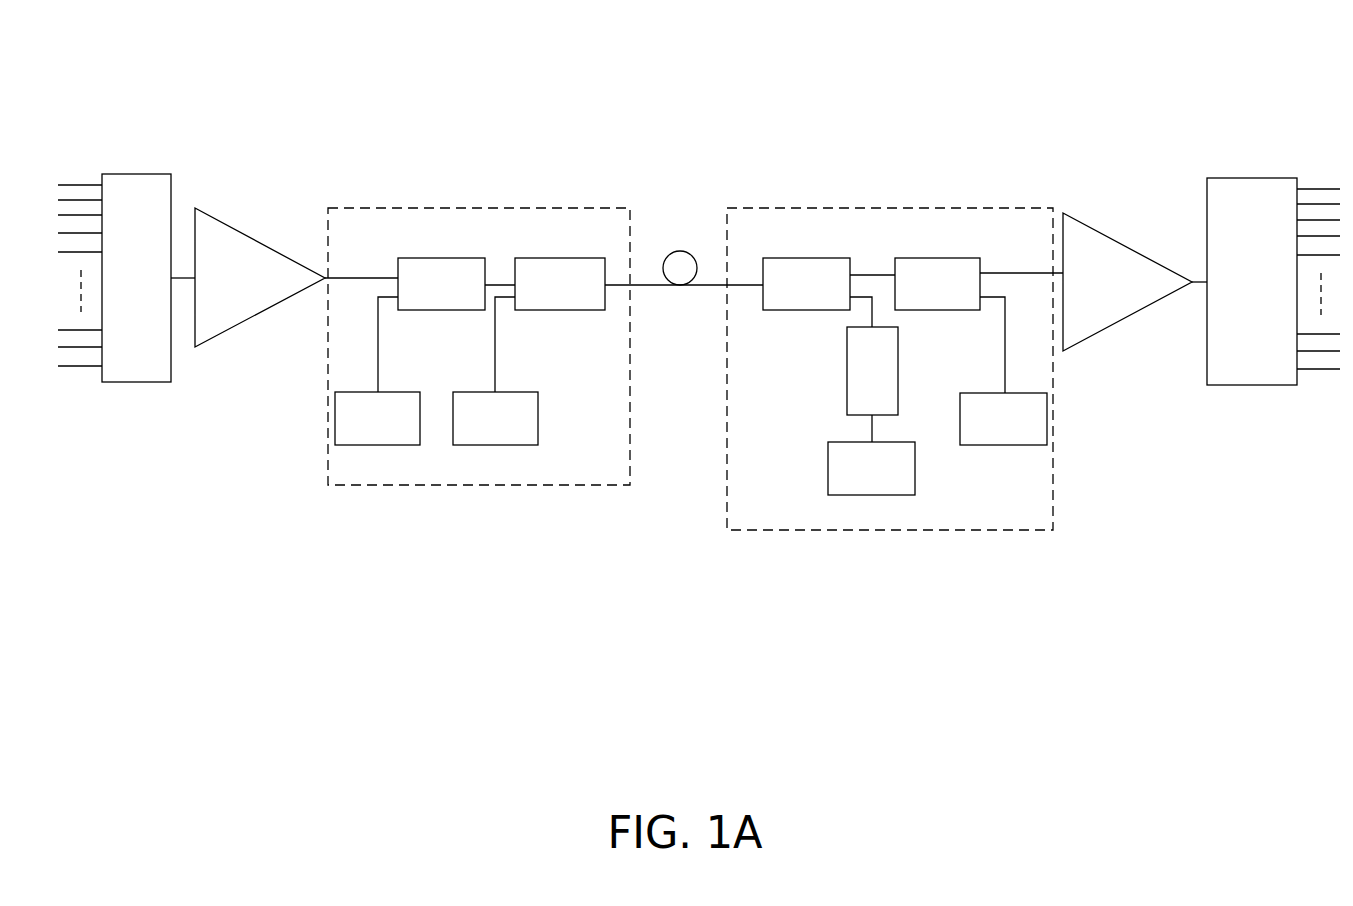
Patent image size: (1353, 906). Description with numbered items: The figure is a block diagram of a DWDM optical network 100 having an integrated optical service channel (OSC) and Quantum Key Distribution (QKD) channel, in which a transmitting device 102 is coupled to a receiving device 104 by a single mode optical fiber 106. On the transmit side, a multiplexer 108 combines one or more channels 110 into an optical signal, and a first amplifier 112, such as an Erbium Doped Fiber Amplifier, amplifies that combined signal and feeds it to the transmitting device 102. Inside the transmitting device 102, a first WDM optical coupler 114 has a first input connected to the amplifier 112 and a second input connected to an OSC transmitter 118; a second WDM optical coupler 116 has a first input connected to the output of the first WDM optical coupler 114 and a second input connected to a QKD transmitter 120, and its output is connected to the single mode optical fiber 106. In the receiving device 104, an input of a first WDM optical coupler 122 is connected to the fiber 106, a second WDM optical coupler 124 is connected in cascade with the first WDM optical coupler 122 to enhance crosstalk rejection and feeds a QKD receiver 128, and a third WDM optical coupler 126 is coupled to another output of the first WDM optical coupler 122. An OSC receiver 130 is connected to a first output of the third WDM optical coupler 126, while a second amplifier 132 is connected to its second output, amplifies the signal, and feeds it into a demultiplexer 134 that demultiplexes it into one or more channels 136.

The DWDM optical network 100 is at (812, 50).
The transmitting device 102 is at (467, 208).
The receiving device 104 is at (830, 208).
The single mode optical fiber 106 is at (697, 261).
The multiplexer 108 is at (137, 174).
The channels 110 is at (70, 168).
The first amplifier 112 is at (225, 222).
The first WDM optical coupler 114 is at (463, 258).
The second WDM optical coupler 116 is at (593, 258).
The OSC transmitter 118 is at (385, 445).
The QKD transmitter 120 is at (513, 445).
The first WDM optical coupler 122 is at (828, 258).
The second WDM optical coupler 124 is at (847, 370).
The third WDM optical coupler 126 is at (960, 258).
The QKD receiver 128 is at (883, 495).
The OSC receiver 130 is at (1018, 445).
The second amplifier 132 is at (1093, 227).
The demultiplexer 134 is at (1248, 178).
The channels 136 is at (1315, 393).